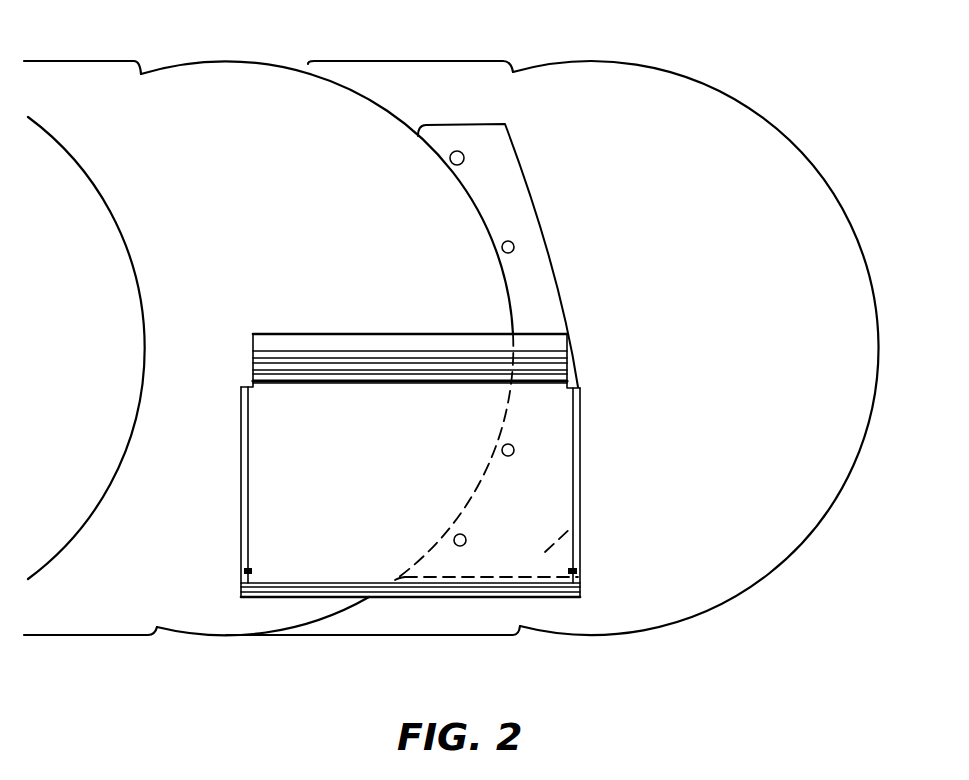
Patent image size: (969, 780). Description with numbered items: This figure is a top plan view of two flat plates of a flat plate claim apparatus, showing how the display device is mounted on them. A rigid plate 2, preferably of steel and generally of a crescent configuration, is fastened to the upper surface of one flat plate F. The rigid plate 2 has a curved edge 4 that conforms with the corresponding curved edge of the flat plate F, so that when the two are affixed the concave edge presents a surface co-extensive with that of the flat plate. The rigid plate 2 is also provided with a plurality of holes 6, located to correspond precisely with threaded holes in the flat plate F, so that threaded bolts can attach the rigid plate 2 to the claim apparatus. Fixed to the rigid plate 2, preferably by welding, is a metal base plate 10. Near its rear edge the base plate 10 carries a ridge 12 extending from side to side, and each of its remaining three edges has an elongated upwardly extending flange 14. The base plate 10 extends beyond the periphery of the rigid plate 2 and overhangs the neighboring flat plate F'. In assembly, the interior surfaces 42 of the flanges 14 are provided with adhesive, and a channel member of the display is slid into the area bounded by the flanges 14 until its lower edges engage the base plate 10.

The rigid plate 2 is at (500, 137).
The curved edge 4 is at (462, 192).
The holes 6 is at (464, 157).
The base plate 10 is at (560, 413).
The ridge 12 is at (367, 382).
The flanges 14 is at (240, 486).
The interior surfaces 42 is at (290, 583).
The flat plate F is at (696, 348).
The neighboring flat plate F' is at (98, 348).